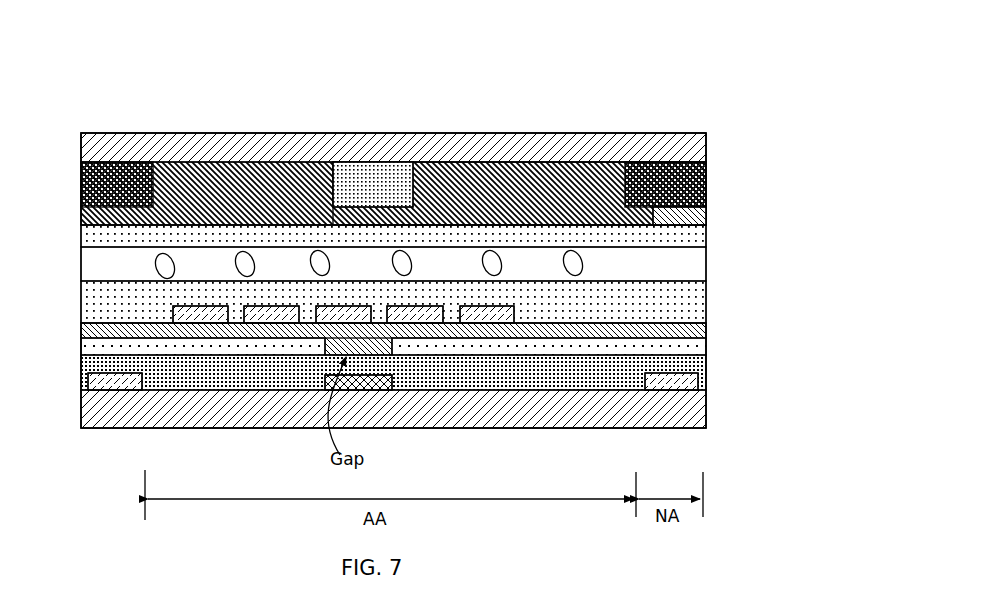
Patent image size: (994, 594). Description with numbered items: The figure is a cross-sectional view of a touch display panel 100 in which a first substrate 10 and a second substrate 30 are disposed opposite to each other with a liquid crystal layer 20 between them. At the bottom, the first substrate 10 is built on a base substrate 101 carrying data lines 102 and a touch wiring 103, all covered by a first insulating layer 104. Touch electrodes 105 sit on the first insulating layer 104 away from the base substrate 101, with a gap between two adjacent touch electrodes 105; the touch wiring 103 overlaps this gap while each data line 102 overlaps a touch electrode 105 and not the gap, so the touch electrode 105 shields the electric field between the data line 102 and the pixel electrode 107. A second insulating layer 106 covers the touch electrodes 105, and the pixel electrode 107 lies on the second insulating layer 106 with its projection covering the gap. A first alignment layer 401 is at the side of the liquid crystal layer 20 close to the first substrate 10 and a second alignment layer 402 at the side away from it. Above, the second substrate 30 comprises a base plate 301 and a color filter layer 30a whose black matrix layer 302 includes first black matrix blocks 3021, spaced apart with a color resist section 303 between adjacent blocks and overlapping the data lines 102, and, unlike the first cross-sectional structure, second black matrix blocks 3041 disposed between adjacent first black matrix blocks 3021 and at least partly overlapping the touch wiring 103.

The touch display panel 100 is at (752, 62).
The second substrate 30 is at (585, 47).
The color filter layer 30a is at (682, 75).
The base plate 301 is at (380, 158).
The black matrix layer 302 is at (117, 184).
The second black matrix block 3041 is at (402, 160).
The first black matrix block 3021 is at (665, 190).
The color resist section 303 is at (563, 176).
The second alignment layer 402 is at (92, 237).
The liquid crystal layer 20 is at (698, 262).
The first alignment layer 401 is at (698, 296).
The pixel electrode 107 is at (173, 313).
The second insulating layer 106 is at (698, 331).
The first insulating layer 104 is at (698, 350).
The first substrate 10 is at (773, 302).
The touch electrode 105 is at (250, 352).
The data line 102 is at (123, 382).
The touch wiring 103 is at (370, 387).
The base substrate 101 is at (698, 412).